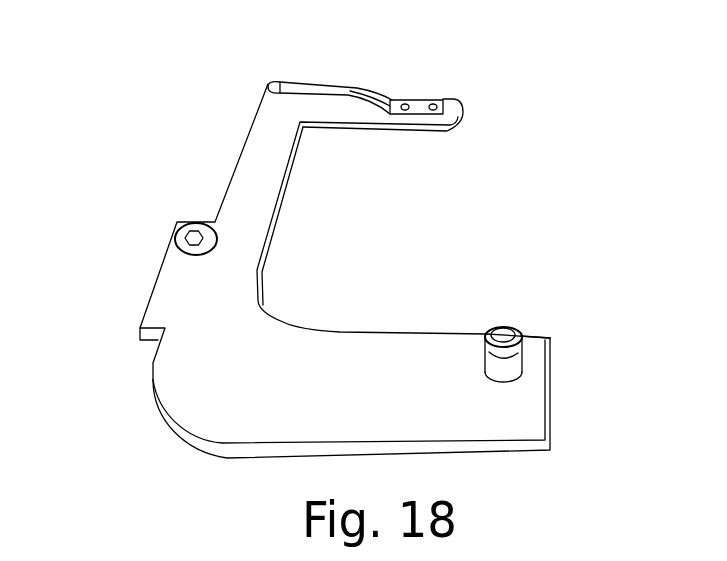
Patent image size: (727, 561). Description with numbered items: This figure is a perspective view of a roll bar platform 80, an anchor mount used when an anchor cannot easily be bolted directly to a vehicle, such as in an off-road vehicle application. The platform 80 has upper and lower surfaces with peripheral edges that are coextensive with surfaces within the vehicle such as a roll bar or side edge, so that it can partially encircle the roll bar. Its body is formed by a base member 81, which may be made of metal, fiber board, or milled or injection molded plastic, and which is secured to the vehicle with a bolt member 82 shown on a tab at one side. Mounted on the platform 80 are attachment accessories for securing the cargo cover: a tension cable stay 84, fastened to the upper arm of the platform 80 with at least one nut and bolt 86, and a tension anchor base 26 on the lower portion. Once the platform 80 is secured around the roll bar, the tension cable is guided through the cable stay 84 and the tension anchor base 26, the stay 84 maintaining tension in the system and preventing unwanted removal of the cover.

The roll bar platform 80 is at (140, 431).
The base member 81 is at (247, 420).
The bolt member 82 is at (183, 240).
The tension cable stay 84 is at (305, 82).
The nut and bolt 86 is at (405, 105).
The tension anchor base 26 is at (522, 335).